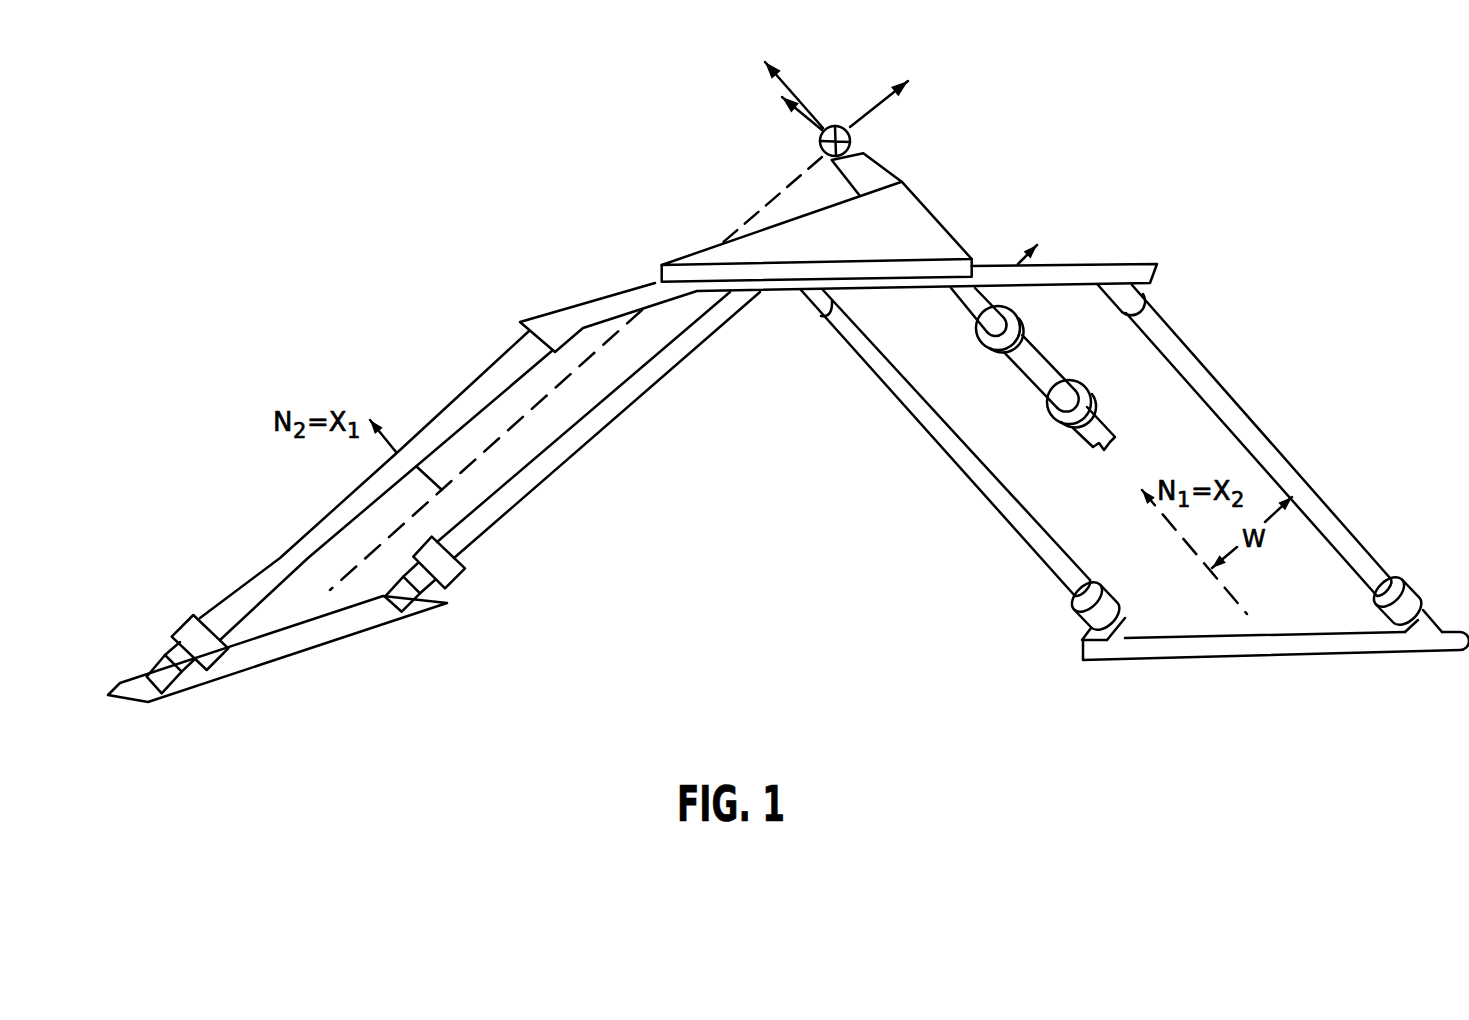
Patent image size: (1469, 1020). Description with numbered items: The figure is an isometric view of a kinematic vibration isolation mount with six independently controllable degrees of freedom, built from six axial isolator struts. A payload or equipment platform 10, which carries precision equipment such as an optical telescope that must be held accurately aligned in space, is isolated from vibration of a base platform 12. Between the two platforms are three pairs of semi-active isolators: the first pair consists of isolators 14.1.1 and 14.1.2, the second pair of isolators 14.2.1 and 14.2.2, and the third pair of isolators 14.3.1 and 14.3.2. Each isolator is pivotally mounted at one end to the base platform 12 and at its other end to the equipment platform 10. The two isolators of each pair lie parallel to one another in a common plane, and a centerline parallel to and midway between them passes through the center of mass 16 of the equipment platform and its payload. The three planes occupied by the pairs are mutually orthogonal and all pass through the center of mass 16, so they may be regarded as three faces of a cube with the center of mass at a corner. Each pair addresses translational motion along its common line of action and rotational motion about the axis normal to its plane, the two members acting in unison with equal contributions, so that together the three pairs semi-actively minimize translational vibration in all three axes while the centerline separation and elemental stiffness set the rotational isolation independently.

The payload or equipment platform 10 is at (927, 210).
The base platform 12 is at (328, 645).
The semi-active isolator 14.1.1 is at (1041, 562).
The semi-active isolator 14.1.2 is at (1315, 488).
The semi-active isolator 14.2.1 is at (1043, 408).
The semi-active isolator 14.2.2 is at (975, 330).
The semi-active isolator 14.3.1 is at (455, 578).
The semi-active isolator 14.3.2 is at (180, 617).
The center of mass 16 is at (850, 137).